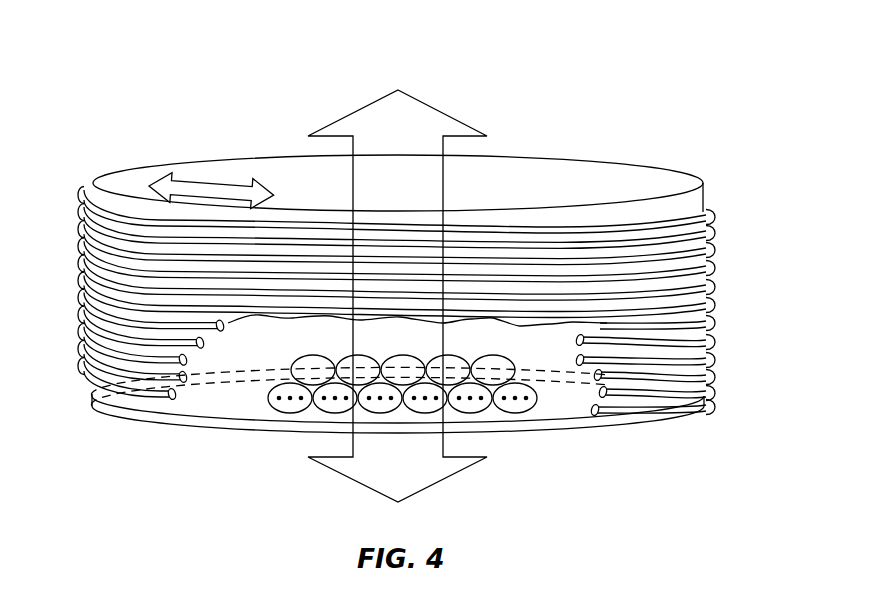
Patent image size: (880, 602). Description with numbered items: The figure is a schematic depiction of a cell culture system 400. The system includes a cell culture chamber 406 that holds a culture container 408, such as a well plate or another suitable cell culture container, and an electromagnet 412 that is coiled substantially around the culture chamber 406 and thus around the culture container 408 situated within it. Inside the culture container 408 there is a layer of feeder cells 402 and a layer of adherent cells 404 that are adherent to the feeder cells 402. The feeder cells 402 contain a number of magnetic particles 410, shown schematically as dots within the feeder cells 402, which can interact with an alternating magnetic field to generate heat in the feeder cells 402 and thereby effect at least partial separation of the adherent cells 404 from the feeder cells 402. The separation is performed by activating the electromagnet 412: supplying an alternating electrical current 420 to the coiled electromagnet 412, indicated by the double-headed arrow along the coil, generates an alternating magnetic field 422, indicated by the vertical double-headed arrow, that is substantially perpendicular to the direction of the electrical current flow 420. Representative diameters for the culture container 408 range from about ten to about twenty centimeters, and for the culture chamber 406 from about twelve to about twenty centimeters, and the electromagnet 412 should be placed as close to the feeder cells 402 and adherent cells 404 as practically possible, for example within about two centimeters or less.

The cell culture system 400 is at (585, 90).
The feeder cells 402 is at (283, 411).
The adherent cells 404 is at (290, 374).
The cell culture chamber 406 is at (698, 204).
The culture container 408 is at (538, 418).
The magnetic particles 410 is at (298, 403).
The electromagnet 412 is at (80, 208).
The alternating electrical current 420 is at (230, 184).
The alternating magnetic field 422 is at (428, 118).